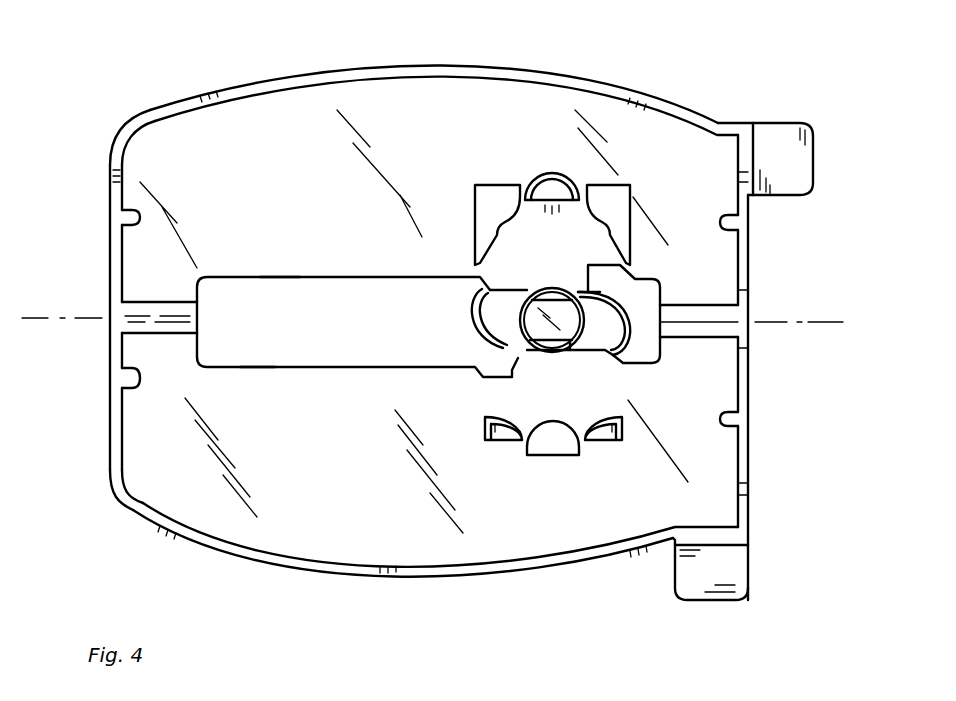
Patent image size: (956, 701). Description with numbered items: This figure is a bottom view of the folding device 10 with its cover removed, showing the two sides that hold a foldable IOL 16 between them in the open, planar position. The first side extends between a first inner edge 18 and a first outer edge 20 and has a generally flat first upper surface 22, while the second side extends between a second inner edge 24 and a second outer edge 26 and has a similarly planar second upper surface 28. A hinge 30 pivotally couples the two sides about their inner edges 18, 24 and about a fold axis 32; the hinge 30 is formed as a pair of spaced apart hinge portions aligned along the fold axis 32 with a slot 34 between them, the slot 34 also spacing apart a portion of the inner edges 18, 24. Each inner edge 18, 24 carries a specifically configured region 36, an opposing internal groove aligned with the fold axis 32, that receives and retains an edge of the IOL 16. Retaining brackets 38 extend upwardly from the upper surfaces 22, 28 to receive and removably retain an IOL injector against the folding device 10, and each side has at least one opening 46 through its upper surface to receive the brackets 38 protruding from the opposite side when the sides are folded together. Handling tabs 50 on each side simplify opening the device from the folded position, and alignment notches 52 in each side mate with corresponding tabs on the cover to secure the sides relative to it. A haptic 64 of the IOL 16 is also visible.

The folding device 10 is at (140, 105).
The foldable IOL 16 is at (575, 325).
The first inner edge 18 is at (248, 367).
The first outer edge 20 is at (352, 573).
The first upper surface 22 is at (430, 517).
The second inner edge 24 is at (355, 277).
The second outer edge 26 is at (392, 66).
The second upper surface 28 is at (318, 105).
The hinge 30 is at (120, 318).
The fold axis 32 is at (788, 327).
The slot 34 is at (278, 277).
The configured region 36 is at (555, 290).
The retaining bracket 38 is at (553, 200).
The opening 46 is at (478, 188).
The handling tab 50 is at (773, 123).
The alignment notch 52 is at (112, 216).
The haptic 64 is at (476, 310).